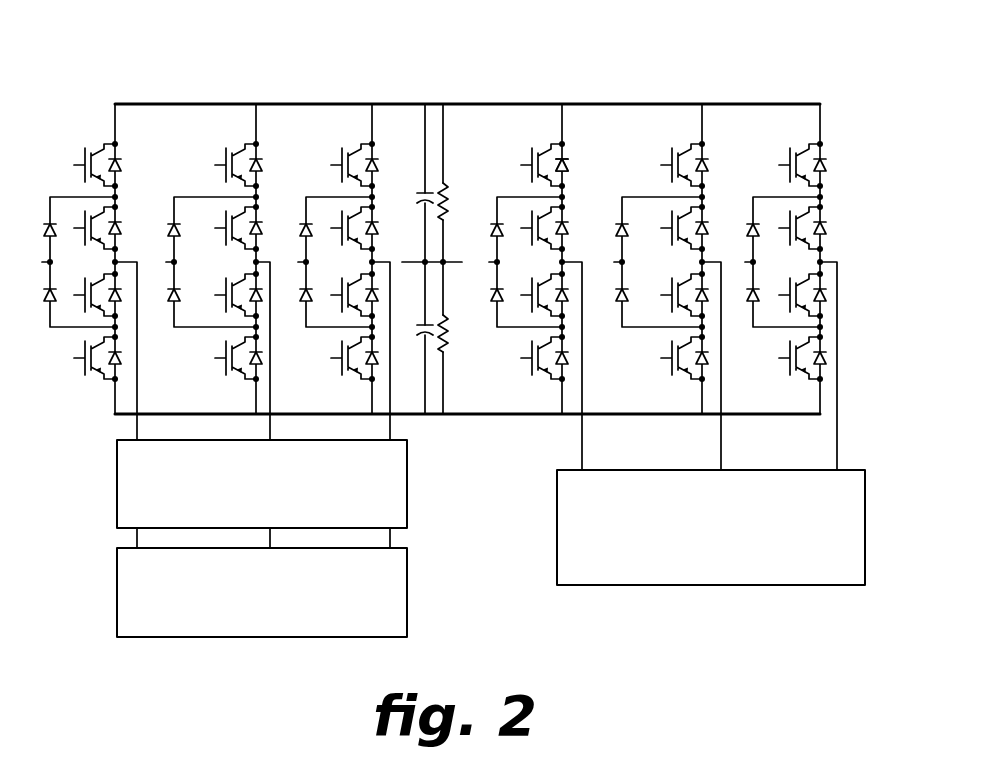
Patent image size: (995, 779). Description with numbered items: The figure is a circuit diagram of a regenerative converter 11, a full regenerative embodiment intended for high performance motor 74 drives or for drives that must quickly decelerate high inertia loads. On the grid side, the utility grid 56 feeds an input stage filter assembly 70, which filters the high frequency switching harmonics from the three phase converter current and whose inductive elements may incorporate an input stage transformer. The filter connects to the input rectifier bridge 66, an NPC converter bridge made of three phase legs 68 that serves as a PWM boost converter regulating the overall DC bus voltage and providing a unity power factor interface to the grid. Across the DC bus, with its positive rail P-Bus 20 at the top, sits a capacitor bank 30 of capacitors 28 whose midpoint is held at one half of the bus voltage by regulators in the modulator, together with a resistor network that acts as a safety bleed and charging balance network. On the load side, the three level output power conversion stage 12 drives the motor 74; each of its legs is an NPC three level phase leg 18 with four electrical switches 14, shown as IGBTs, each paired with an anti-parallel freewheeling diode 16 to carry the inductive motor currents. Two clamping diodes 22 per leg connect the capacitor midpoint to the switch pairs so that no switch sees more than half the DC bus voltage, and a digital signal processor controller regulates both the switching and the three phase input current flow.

The regenerative converter 11 is at (493, 562).
The three level output power conversion stage 12 is at (820, 72).
The electrical switch 14 is at (521, 148).
The anti-parallel freewheeling diode 16 is at (572, 164).
The NPC three level phase leg 18 is at (562, 104).
The P-Bus 20 is at (749, 103).
The clamping diode 22 is at (490, 228).
The capacitor 28 is at (420, 194).
The capacitor bank 30 is at (435, 421).
The utility grid 56 is at (407, 590).
The input rectifier bridge 66 is at (372, 93).
The phase leg 68 is at (267, 130).
The input stage filter assembly 70 is at (117, 489).
The motor 74 is at (557, 530).